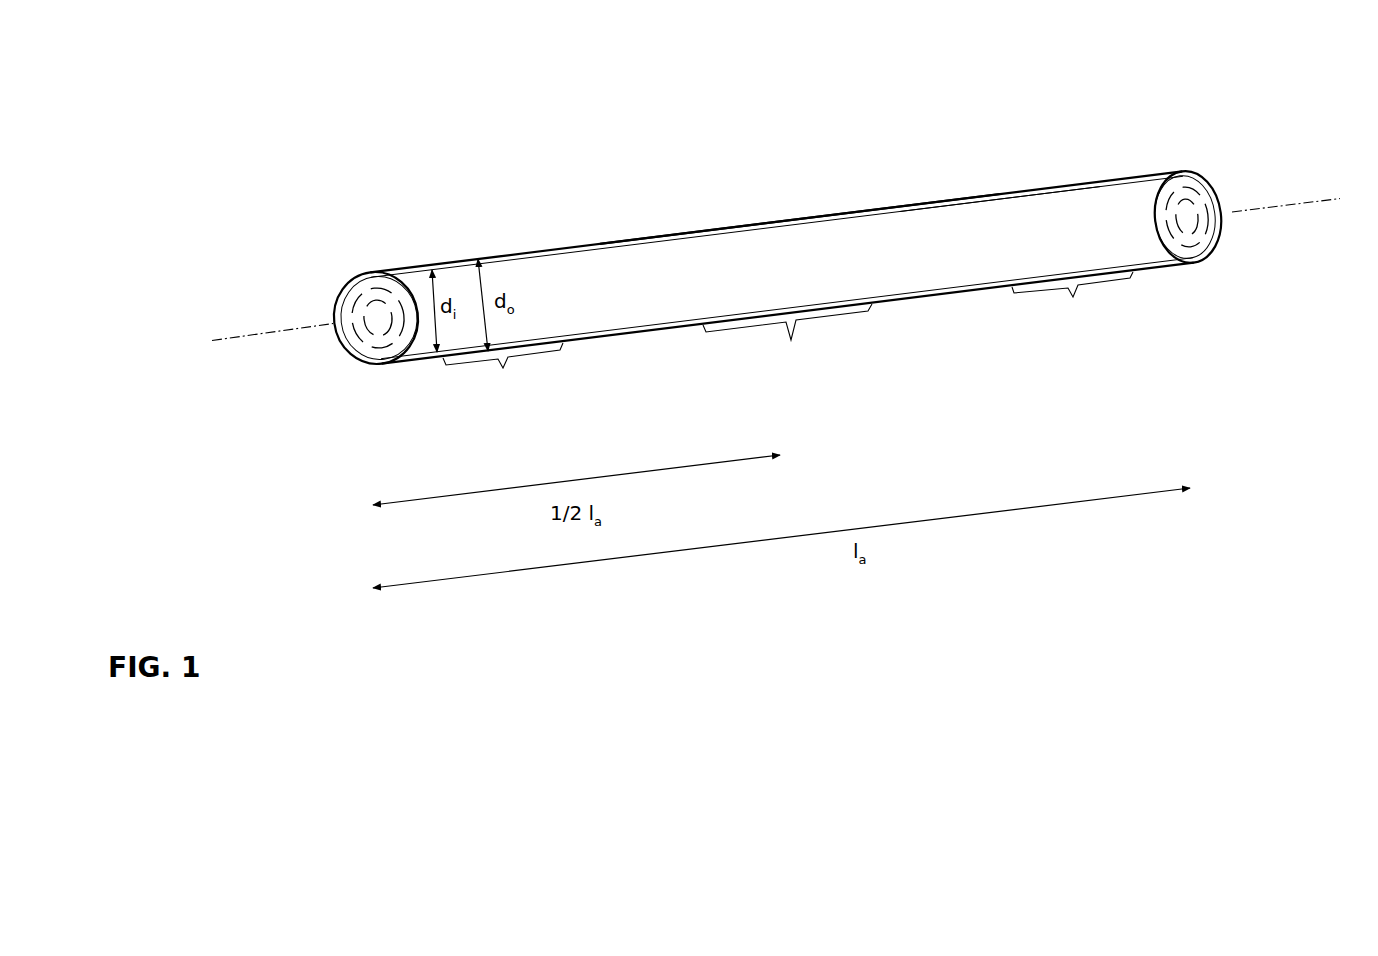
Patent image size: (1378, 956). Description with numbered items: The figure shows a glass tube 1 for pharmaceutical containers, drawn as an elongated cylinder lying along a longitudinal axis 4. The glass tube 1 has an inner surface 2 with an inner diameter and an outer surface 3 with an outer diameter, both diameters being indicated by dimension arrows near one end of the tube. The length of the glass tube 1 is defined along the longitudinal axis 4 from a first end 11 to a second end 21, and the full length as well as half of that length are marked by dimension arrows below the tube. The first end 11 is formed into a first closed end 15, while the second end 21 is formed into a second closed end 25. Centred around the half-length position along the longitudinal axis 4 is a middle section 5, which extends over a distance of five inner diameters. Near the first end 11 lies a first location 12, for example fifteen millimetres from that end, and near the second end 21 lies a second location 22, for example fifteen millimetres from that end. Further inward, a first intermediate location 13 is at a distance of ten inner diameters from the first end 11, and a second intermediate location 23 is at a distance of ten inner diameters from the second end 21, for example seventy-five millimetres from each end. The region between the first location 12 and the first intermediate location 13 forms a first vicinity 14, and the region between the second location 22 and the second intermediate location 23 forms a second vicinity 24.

The glass tube 1 is at (681, 134).
The inner surface 2 is at (990, 206).
The outer surface 3 is at (834, 206).
The longitudinal axis 4 is at (785, 262).
The middle section 5 is at (787, 335).
The first end 11 is at (1197, 167).
The first location 12 is at (1133, 278).
The first intermediate location 13 is at (1003, 296).
The first vicinity 14 is at (1073, 307).
The first closed end 15 is at (1198, 234).
The second end 21 is at (378, 370).
The second location 22 is at (440, 364).
The second intermediate location 23 is at (565, 351).
The second vicinity 24 is at (503, 368).
The second closed end 25 is at (372, 317).